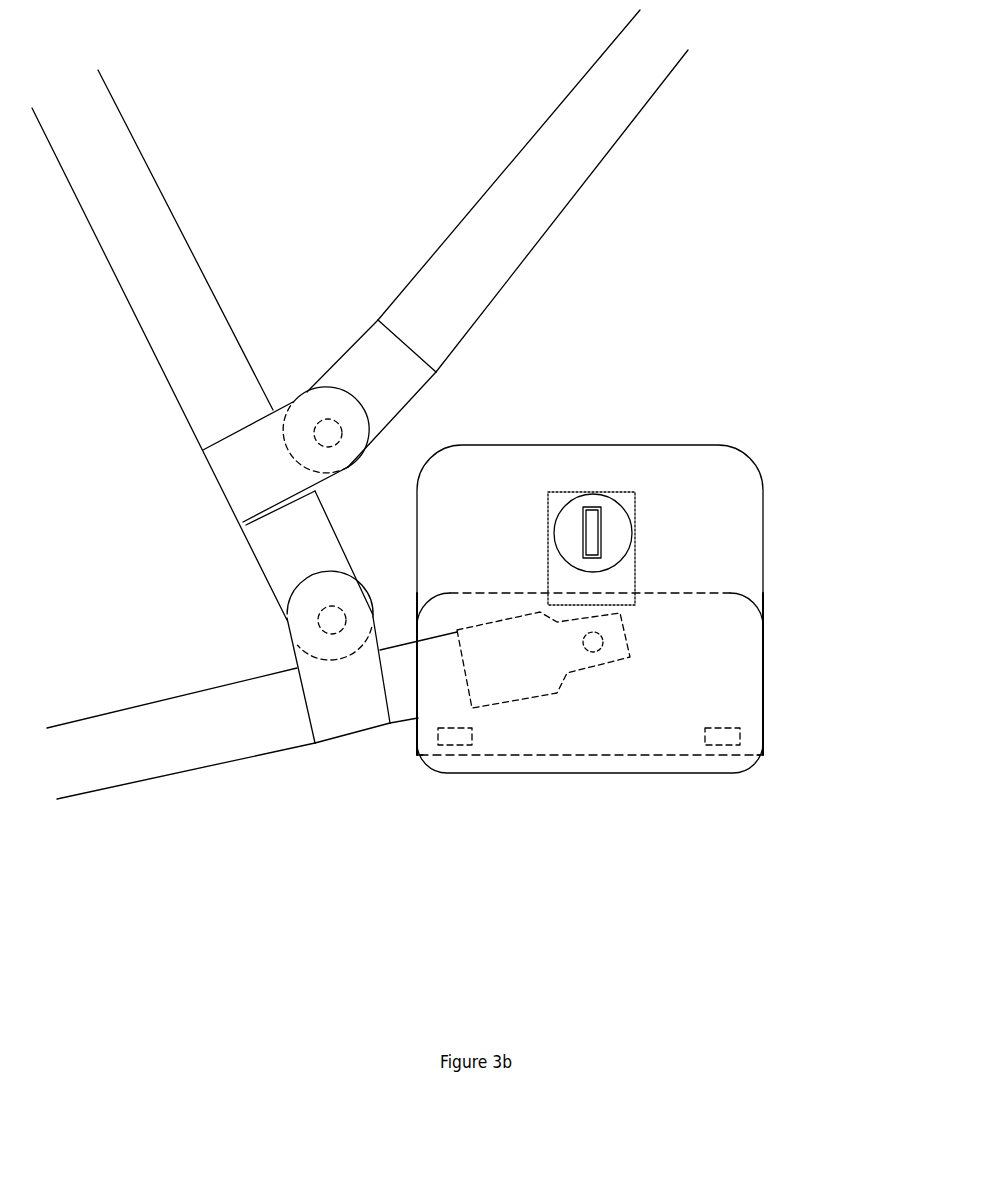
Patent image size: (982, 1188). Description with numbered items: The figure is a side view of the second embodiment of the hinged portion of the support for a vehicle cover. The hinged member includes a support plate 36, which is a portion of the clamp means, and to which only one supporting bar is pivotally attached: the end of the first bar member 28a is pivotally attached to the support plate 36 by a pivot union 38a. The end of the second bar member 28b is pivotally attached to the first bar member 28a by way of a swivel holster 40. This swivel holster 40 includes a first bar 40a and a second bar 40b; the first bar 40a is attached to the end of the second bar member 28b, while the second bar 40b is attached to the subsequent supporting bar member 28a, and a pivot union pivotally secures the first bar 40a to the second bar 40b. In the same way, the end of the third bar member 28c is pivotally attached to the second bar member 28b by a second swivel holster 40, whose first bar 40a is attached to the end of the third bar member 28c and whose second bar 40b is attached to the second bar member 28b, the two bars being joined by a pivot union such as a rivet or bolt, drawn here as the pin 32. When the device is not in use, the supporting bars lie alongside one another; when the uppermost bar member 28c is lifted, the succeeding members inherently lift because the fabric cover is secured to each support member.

The first bar member 28a is at (157, 747).
The second bar member 28b is at (155, 302).
The third bar member 28c is at (572, 168).
The pin 32 is at (223, 646).
The support plate 36 is at (725, 467).
The pivot union 38a is at (605, 643).
The swivel holster 40 is at (323, 561).
The first bar 40a is at (405, 390).
The second bar 40b is at (268, 433).